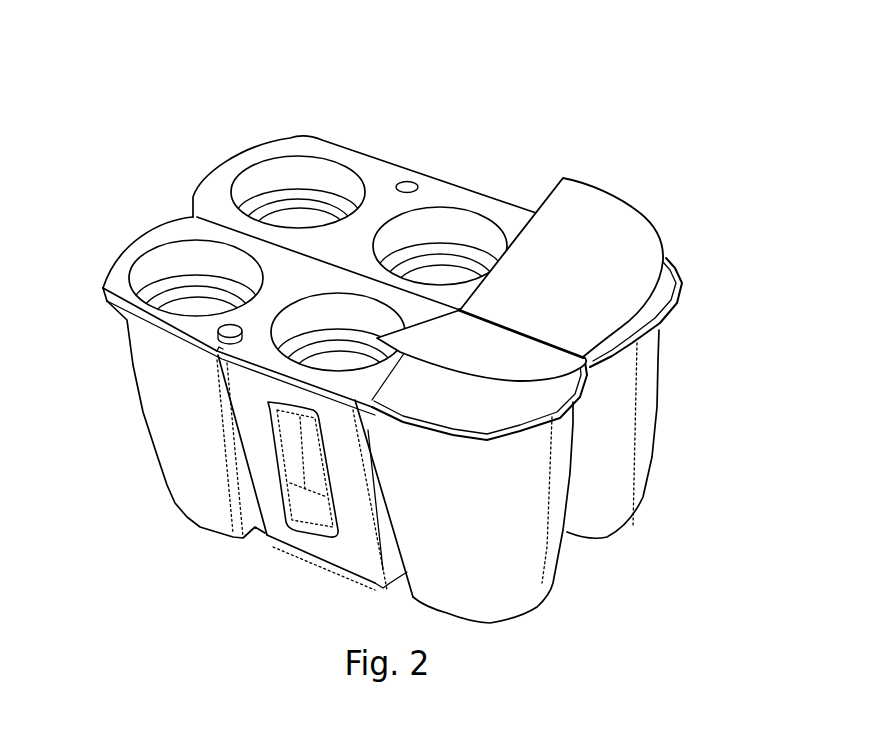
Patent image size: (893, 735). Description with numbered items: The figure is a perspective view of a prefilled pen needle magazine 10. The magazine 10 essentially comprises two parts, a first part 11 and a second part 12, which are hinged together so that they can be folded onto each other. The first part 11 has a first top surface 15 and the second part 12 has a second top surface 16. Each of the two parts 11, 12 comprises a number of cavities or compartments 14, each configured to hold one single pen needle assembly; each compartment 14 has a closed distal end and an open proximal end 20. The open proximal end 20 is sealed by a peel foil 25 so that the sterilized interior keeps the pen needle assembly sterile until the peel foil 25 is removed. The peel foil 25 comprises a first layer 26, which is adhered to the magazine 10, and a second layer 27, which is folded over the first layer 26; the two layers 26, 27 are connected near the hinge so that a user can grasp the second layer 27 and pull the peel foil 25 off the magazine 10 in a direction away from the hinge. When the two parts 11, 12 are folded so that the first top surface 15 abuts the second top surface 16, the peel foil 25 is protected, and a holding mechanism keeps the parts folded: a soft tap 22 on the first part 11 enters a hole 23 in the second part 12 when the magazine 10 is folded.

The prefilled needle magazine 10 is at (398, 362).
The first part 11 is at (190, 493).
The second part 12 is at (643, 400).
The compartments 14 is at (297, 217).
The first top surface 15 is at (177, 228).
The second top surface 16 is at (373, 167).
The open proximal end 20 is at (173, 260).
The soft tap 22 is at (218, 341).
The hole 23 is at (413, 183).
The peel foil 25 is at (540, 407).
The first layer 26 is at (665, 290).
The second layer 27 is at (630, 217).